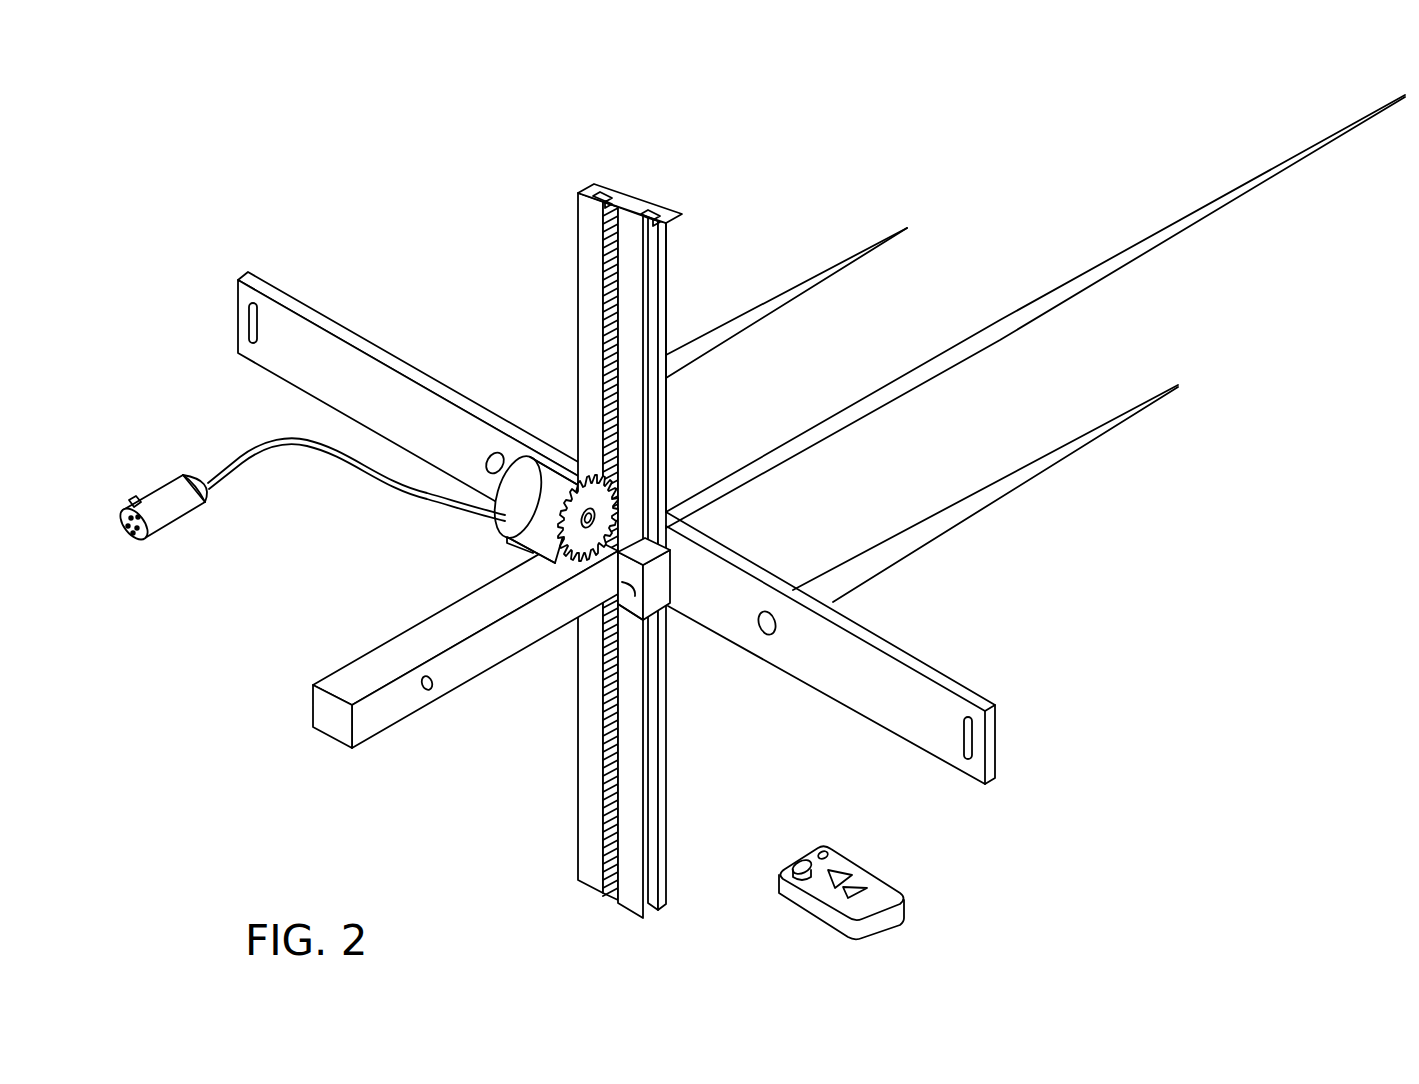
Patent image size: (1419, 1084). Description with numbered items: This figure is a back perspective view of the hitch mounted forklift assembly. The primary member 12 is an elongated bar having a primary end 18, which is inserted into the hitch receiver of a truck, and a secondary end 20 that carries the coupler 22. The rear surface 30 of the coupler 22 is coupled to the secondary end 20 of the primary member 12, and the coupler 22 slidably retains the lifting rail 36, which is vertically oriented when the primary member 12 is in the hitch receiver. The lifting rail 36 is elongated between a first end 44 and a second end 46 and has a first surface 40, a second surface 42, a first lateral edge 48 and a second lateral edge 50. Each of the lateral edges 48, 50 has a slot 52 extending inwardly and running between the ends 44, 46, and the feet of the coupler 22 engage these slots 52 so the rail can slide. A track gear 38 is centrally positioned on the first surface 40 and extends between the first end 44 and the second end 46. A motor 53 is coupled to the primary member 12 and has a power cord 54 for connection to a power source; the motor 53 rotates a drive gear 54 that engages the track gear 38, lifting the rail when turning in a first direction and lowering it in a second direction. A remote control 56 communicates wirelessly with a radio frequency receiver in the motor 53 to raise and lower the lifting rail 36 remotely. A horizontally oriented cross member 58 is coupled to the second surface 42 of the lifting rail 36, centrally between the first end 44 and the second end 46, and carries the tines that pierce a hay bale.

The primary member 12 is at (386, 645).
The primary end 18 is at (330, 722).
The secondary end 20 is at (670, 603).
The coupler 22 is at (640, 640).
The rear surface 30 is at (625, 600).
The lifting rail 36 is at (600, 187).
The track gear 38 is at (590, 378).
The first surface 40 is at (597, 258).
The second surface 42 is at (667, 272).
The first end 44 is at (630, 195).
The second end 46 is at (621, 903).
The first lateral edge 48 is at (578, 793).
The second lateral edge 50 is at (648, 847).
The slot 52 is at (588, 170).
The motor 53 is at (527, 473).
The drive gear 54 is at (597, 483).
The remote control 56 is at (903, 873).
The cross member 58 is at (283, 273).